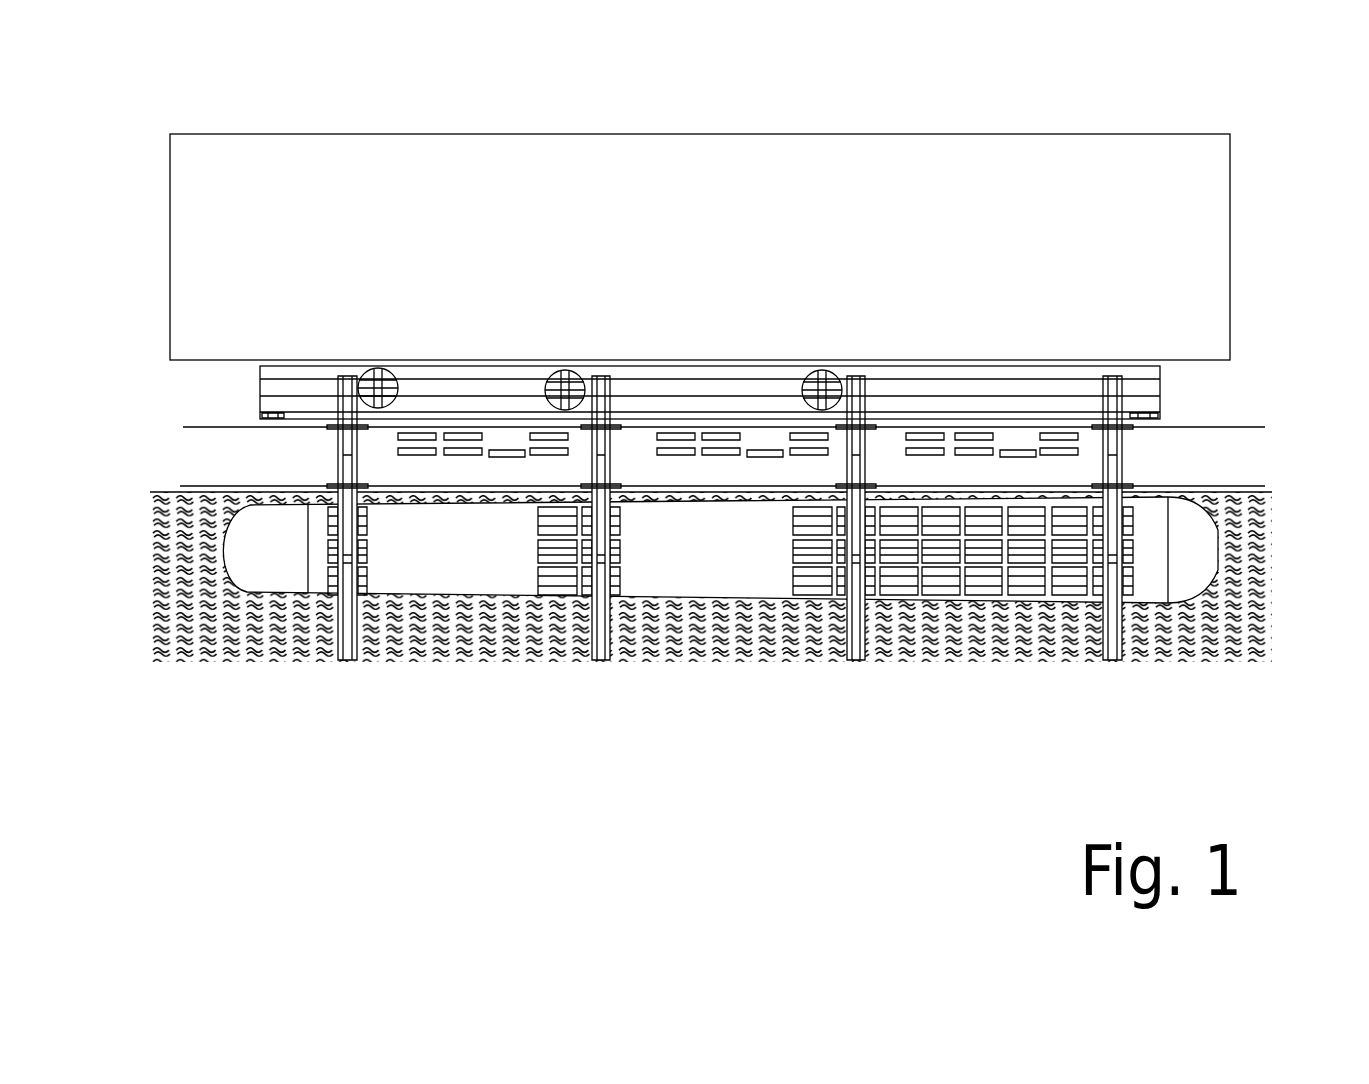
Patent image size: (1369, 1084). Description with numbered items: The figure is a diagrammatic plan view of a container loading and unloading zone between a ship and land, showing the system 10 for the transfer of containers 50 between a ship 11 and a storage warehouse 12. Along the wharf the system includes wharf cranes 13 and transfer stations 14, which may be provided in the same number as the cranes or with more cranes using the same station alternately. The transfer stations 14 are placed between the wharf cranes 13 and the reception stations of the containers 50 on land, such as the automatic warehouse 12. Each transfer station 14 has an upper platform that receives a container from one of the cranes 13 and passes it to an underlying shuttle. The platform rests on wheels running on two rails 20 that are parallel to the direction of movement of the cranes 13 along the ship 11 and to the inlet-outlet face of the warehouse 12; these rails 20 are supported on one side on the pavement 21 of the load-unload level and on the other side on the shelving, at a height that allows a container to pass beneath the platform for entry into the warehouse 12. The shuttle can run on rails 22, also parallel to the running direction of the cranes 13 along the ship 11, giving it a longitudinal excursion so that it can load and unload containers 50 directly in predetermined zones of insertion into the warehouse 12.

The system 10 is at (1283, 286).
The ship 11 is at (268, 575).
The storage warehouse 12 is at (325, 158).
The wharf cranes 13 is at (345, 661).
The transfer stations 14 is at (393, 368).
The rails 20 is at (260, 397).
The pavement 21 is at (277, 368).
The rails 22 is at (1160, 381).
The containers 50 is at (952, 588).